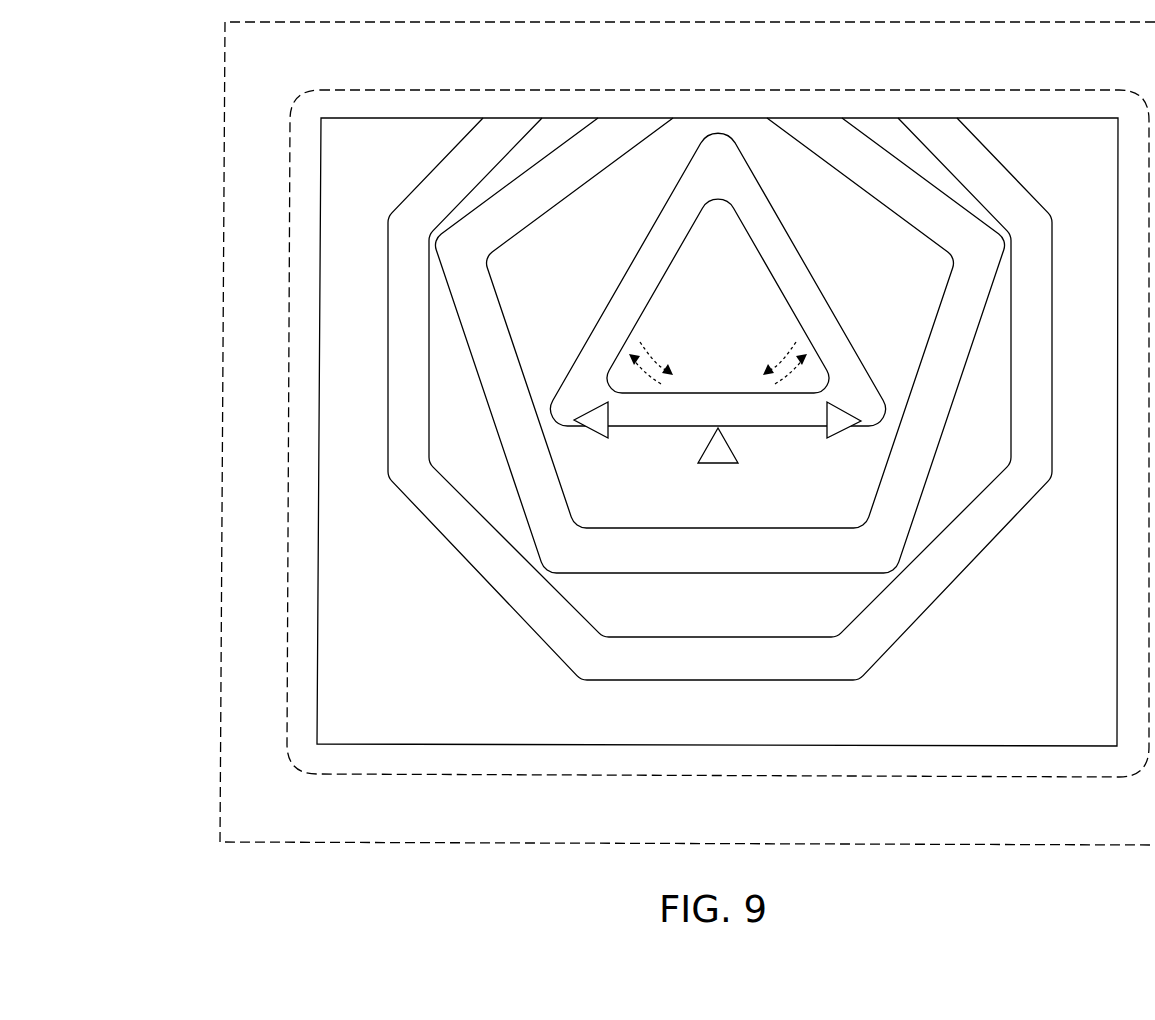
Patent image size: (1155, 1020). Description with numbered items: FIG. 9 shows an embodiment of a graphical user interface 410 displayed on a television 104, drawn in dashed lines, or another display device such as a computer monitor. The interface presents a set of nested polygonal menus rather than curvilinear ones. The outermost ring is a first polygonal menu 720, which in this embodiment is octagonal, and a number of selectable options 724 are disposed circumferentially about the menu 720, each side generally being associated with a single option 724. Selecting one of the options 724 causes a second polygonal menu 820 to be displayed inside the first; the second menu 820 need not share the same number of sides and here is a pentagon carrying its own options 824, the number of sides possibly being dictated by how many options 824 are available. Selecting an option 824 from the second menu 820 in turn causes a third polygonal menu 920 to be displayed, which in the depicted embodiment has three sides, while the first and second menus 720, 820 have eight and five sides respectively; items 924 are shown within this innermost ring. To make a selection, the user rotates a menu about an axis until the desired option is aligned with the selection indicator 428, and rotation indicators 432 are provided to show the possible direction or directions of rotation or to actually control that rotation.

The television 104 is at (222, 162).
The graphical user interface 410 is at (979, 676).
The selection indicator 428 is at (730, 461).
The rotation indicators 432 is at (594, 433).
The first polygonal menu 720 is at (470, 570).
The selectable options 724 is at (521, 587).
The second polygonal menu 820 is at (503, 470).
The options 824 is at (548, 190).
The third polygonal menu 920 is at (657, 426).
The third-level menu items 924 is at (787, 307).